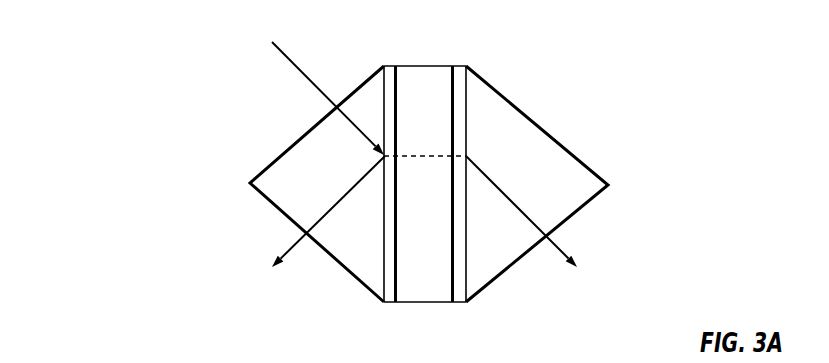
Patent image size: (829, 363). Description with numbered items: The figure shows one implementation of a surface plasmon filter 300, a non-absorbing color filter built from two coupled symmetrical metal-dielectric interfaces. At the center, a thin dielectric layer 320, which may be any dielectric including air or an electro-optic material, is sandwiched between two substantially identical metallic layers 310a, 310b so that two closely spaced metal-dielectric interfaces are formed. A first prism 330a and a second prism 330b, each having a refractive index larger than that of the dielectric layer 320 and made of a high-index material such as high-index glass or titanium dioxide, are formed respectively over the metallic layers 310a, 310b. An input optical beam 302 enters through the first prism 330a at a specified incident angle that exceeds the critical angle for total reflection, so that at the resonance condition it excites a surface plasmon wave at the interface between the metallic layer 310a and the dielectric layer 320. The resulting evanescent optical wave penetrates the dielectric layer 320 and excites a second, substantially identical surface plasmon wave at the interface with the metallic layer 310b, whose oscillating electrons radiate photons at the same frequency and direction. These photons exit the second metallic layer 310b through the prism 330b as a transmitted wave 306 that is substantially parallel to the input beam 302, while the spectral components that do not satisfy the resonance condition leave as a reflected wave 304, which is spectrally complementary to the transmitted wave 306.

The surface plasmon filter 300 is at (108, 42).
The input optical beam 302 is at (262, 98).
The reflected wave 304 is at (260, 229).
The transmitted wave 306 is at (603, 229).
The first metallic layer 310a is at (381, 166).
The second metallic layer 310b is at (463, 166).
The dielectric layer 320 is at (440, 280).
The first prism 330a is at (335, 184).
The second prism 330b is at (542, 170).